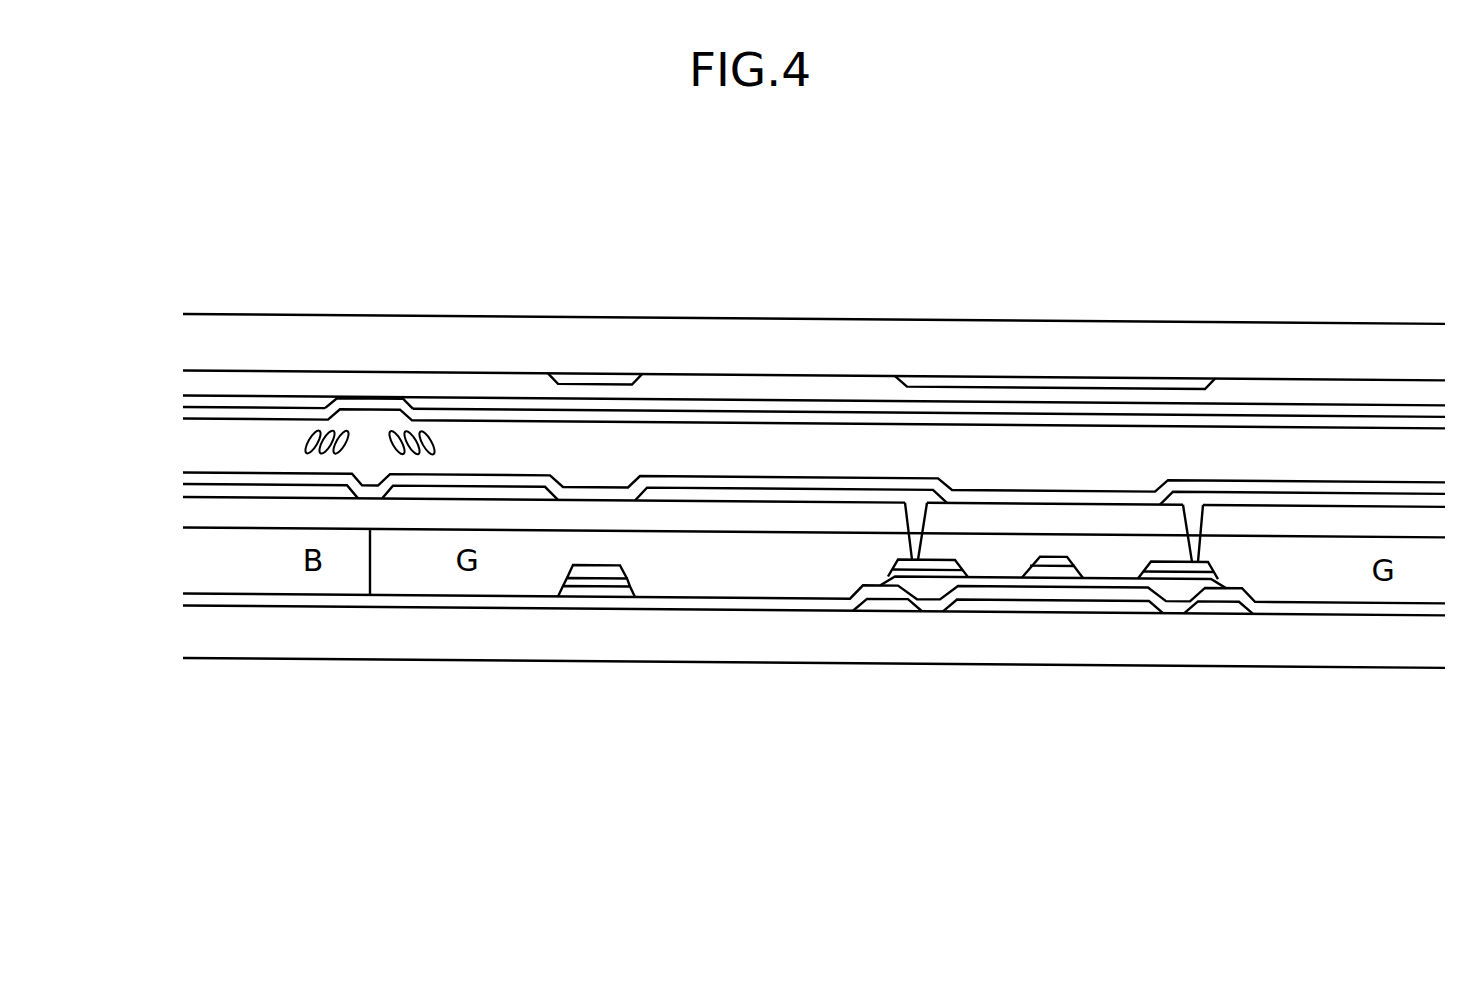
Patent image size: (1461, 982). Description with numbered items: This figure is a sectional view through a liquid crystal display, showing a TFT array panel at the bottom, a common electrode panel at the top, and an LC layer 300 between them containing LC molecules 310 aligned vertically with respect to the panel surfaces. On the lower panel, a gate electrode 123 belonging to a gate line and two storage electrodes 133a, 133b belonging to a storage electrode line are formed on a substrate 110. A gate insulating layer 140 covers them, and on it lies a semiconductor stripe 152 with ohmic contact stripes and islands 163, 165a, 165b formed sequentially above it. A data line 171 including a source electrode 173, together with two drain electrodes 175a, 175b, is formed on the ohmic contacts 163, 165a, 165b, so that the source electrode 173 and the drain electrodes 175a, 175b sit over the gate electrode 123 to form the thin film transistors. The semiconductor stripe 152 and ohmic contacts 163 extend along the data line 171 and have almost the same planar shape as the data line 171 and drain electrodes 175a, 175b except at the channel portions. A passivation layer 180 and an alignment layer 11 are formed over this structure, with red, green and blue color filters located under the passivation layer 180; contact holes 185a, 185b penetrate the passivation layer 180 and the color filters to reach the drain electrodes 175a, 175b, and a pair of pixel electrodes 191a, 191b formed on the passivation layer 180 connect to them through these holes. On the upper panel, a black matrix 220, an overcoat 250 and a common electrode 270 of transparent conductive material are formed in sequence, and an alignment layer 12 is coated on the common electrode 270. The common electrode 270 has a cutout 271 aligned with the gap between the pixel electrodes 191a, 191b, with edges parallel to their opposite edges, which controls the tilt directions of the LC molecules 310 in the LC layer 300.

The LC layer 300 is at (186, 455).
The LC molecules 310 is at (343, 432).
The cutout 271 is at (387, 396).
The common electrode 270 is at (787, 405).
The overcoat 250 is at (947, 388).
The black matrix 220 is at (600, 378).
The alignment layer 12 is at (1123, 418).
The alignment layer 11 is at (453, 478).
The pixel electrode 191a is at (263, 492).
The pixel electrode 191b is at (413, 490).
The passivation layer 180 is at (693, 513).
The gate insulating layer 140 is at (650, 603).
The substrate 110 is at (765, 633).
The semiconductor stripe 152 is at (622, 590).
The ohmic contact stripe 163 is at (572, 583).
The ohmic contact island 165a is at (935, 578).
The ohmic contact island 165b is at (1177, 580).
The data line 171 is at (595, 572).
The source electrode 173 is at (1056, 563).
The drain electrode 175a is at (915, 565).
The drain electrode 175b is at (1197, 568).
The gate electrode 123 is at (993, 608).
The storage electrode 133a is at (872, 605).
The storage electrode 133b is at (1237, 608).
The contact hole 185a is at (900, 530).
The contact hole 185b is at (1208, 526).